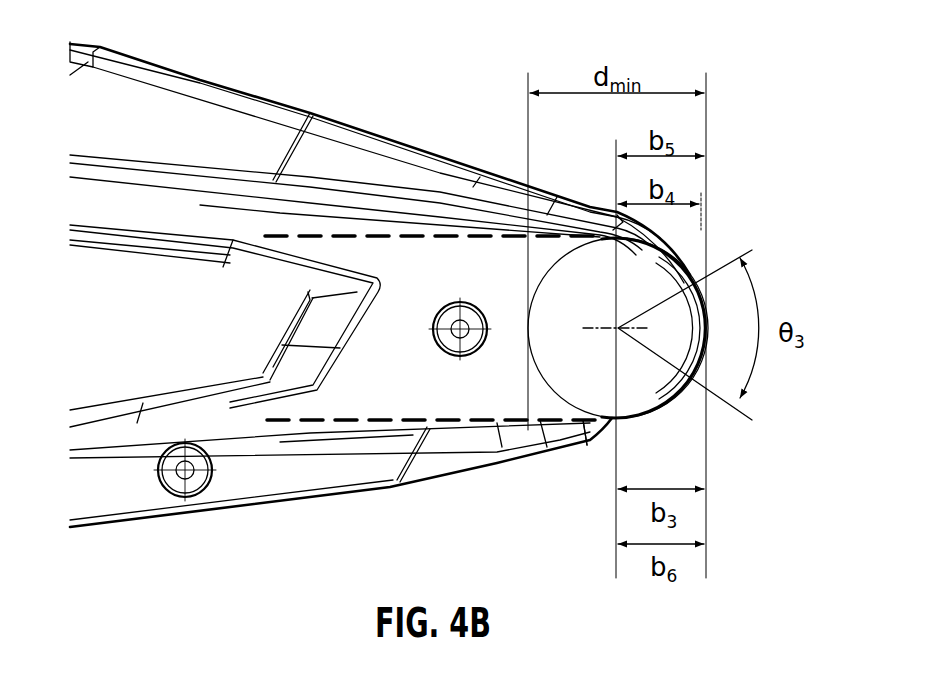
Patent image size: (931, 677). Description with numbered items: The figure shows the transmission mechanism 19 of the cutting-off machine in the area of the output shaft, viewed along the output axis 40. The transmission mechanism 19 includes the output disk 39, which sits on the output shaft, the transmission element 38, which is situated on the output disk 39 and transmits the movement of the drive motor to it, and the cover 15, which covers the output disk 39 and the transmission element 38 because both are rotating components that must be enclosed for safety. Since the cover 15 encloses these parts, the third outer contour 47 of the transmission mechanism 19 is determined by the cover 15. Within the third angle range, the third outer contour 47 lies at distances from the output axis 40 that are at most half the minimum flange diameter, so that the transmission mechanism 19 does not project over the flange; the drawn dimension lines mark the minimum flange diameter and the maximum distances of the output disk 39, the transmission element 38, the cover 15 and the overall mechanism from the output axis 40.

The cover 15 is at (370, 170).
The transmission mechanism 19 is at (696, 63).
The transmission element 38 is at (502, 447).
The output disk 39 is at (583, 446).
The output axis 40 is at (618, 328).
The third outer contour 47 is at (267, 505).